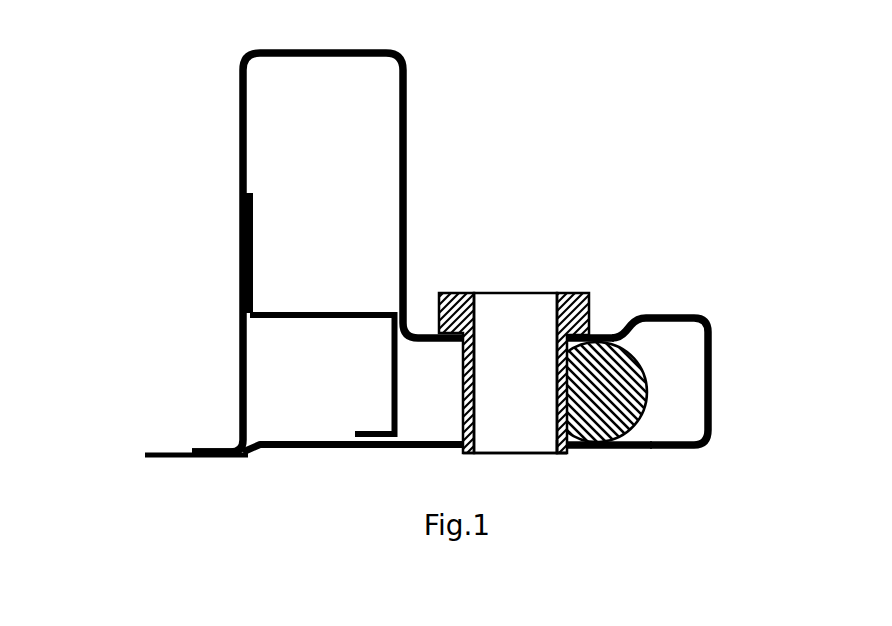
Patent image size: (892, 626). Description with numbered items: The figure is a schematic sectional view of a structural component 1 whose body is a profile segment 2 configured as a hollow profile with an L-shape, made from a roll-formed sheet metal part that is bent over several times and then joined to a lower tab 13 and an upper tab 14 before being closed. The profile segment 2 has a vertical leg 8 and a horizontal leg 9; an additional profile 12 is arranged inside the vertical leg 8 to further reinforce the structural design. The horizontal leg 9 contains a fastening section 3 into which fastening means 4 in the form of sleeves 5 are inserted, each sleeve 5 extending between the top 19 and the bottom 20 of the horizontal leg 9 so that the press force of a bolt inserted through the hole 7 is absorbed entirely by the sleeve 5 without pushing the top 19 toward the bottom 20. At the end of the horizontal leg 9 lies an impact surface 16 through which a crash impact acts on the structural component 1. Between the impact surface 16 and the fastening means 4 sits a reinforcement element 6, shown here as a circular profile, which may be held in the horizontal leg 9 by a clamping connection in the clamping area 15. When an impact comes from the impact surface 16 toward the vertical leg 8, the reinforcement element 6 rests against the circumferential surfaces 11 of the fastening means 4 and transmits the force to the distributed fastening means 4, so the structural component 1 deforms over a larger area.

The structural component 1 is at (150, 36).
The profile segment 2 is at (240, 282).
The vertical leg 8 is at (238, 133).
The fastening section 3 is at (513, 357).
The horizontal leg 9 is at (559, 243).
The sleeve 5 is at (447, 293).
The hole 7 is at (500, 445).
The fastening means 4 is at (543, 465).
The circumferential surface 11 is at (576, 457).
The additional profile 12 is at (262, 318).
The lower tab 13 is at (175, 456).
The upper tab 14 is at (200, 447).
The clamping area 15 is at (611, 328).
The impact surface 16 is at (755, 373).
The top 19 is at (690, 278).
The bottom 20 is at (683, 488).
The reinforcement element 6 is at (607, 362).